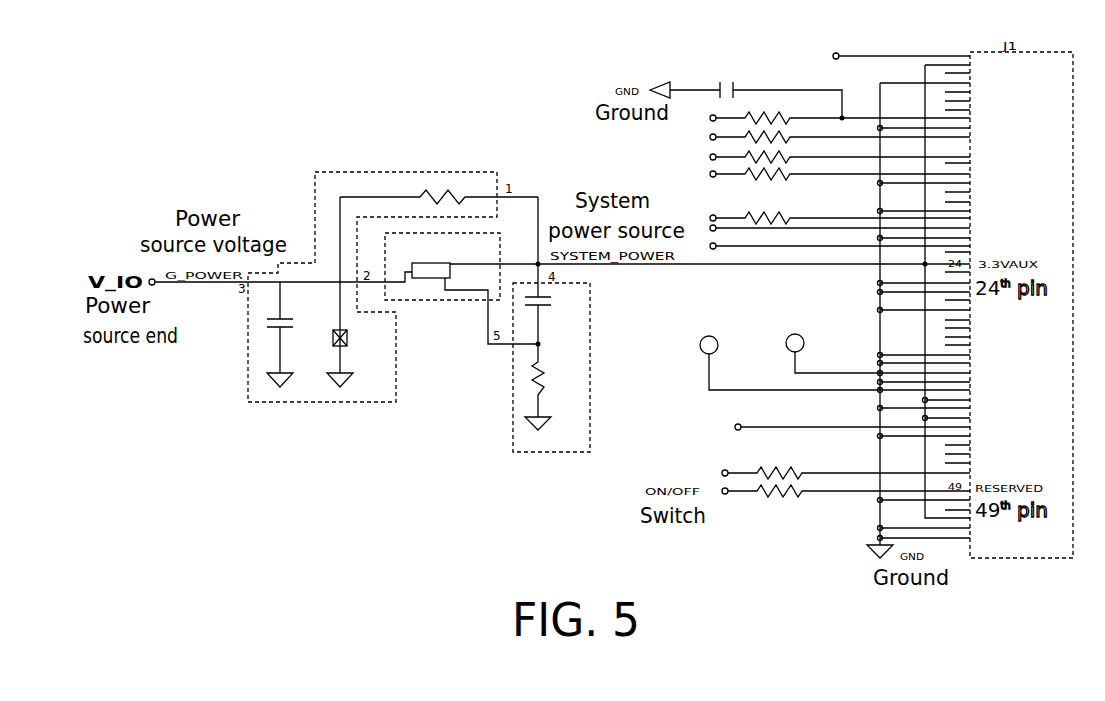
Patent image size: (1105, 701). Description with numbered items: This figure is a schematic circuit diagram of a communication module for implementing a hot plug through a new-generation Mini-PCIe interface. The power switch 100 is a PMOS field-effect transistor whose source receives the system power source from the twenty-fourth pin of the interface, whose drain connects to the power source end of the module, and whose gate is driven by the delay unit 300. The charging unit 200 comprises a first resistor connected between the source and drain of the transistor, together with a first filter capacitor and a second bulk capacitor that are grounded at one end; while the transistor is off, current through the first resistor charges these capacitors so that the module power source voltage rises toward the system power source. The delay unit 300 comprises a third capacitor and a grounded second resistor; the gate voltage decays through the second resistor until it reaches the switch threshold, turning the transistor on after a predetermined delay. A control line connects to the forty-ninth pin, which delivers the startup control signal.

The power switch 100 is at (483, 300).
The charging unit 200 is at (414, 172).
The delay unit 300 is at (590, 392).